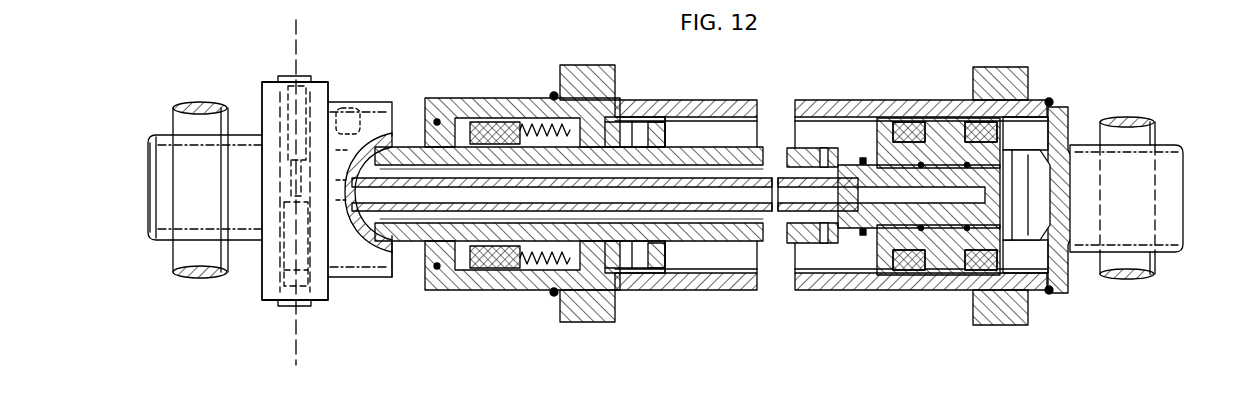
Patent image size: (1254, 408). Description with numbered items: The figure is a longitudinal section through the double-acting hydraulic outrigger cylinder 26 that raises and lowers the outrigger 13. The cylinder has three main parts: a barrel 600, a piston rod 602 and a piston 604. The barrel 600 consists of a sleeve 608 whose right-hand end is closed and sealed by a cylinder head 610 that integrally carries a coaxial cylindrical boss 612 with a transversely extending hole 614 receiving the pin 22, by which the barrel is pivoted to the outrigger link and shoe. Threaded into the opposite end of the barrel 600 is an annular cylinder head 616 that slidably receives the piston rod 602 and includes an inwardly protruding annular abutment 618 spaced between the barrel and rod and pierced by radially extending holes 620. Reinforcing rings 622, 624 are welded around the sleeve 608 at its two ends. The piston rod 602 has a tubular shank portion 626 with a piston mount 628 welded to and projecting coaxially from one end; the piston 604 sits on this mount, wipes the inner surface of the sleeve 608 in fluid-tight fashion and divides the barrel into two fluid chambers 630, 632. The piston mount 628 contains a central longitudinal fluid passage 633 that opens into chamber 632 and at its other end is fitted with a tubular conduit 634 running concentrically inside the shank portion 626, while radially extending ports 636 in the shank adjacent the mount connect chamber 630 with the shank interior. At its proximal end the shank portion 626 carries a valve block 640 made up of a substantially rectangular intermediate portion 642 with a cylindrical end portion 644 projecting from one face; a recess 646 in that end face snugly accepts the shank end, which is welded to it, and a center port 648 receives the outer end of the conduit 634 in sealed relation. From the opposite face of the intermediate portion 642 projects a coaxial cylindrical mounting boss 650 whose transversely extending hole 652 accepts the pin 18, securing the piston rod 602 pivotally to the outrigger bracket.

The outrigger 13 is at (284, 50).
The upper pin 18 is at (173, 262).
The horizontal pin 22 is at (1145, 118).
The outrigger cylinder 26 is at (378, 374).
The barrel 600 is at (822, 100).
The piston rod 602 is at (722, 245).
The piston 604 is at (945, 292).
The sleeve 608 is at (730, 100).
The cylinder head 610 is at (1072, 112).
The cylindrical boss 612 is at (1185, 216).
The transversely extending hole 614 is at (1160, 242).
The annular cylinder head 616 is at (500, 98).
The annular abutment 618 is at (662, 128).
The radially extending holes 620 is at (640, 126).
The reinforcing ring 622 is at (590, 322).
The reinforcing ring 624 is at (1005, 328).
The tubular shank portion 626 is at (770, 150).
The piston mount 628 is at (866, 245).
The fluid chamber 630 is at (700, 262).
The fluid chamber 632 is at (1030, 270).
The fluid passage 633 is at (918, 190).
The tubular conduit 634 is at (800, 244).
The radially extending ports 636 is at (826, 150).
The valve block 640 is at (250, 88).
The intermediate portion 642 is at (322, 82).
The cylindrical end portion 644 is at (392, 104).
The recess 646 is at (393, 252).
The center port 648 is at (368, 247).
The mounting boss 650 is at (148, 213).
The transversely extending hole 652 is at (148, 150).